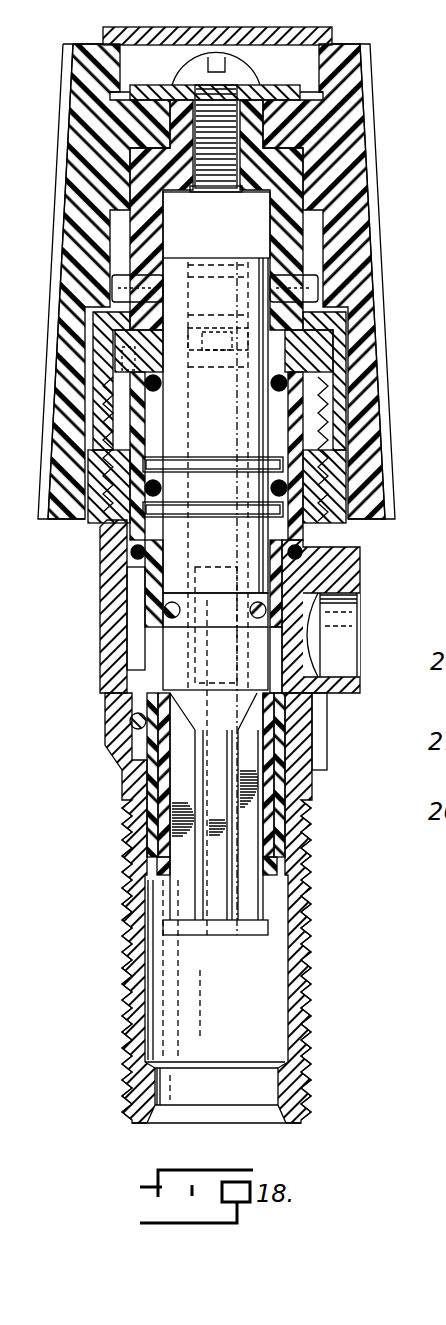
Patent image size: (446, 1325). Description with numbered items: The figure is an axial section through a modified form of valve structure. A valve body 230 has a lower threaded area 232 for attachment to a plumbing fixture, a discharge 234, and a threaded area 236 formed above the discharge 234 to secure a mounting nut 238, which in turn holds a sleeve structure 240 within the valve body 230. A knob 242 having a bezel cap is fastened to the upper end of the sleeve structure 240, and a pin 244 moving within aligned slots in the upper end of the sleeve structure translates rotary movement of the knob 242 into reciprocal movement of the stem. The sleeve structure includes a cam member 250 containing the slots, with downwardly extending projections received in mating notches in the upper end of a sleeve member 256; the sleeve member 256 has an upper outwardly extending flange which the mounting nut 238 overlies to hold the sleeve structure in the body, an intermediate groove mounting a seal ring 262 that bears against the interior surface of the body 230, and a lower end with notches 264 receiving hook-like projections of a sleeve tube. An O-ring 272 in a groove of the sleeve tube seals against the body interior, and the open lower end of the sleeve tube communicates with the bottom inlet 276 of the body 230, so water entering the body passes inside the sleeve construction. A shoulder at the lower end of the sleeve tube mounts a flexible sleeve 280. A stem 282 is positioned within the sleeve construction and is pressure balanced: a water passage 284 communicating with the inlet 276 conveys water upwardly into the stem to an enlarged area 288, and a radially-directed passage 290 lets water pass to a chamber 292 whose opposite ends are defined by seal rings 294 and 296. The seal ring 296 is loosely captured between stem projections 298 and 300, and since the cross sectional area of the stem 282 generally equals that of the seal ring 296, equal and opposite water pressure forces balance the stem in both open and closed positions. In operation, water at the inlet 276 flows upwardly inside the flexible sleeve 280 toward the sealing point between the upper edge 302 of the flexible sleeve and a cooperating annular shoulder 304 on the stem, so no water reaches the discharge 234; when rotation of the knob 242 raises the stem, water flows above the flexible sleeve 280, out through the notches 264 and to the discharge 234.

The valve body 230 is at (303, 915).
The lower threaded area 232 is at (310, 987).
The discharge 234 is at (360, 622).
The threaded area 236 is at (300, 472).
The mounting nut 238 is at (330, 343).
The sleeve structure 240 is at (307, 360).
The knob 242 is at (357, 143).
The pin 244 is at (308, 287).
The cam member 250 is at (290, 203).
The sleeve member 256 is at (295, 480).
The seal ring 262 is at (303, 556).
The notches 264 is at (303, 648).
The O-ring 272 is at (128, 727).
The bottom inlet 276 is at (218, 1117).
The flexible sleeve 280 is at (157, 817).
The stem 282 is at (253, 257).
The water passage 284 is at (200, 658).
The enlarged area 288 is at (213, 234).
The radially-directed passage 290 is at (240, 457).
The chamber 292 is at (283, 428).
The seal ring 294 is at (150, 384).
The seal ring 296 is at (330, 518).
The stem projection 298 is at (103, 521).
The stem projection 300 is at (107, 550).
The upper edge 302 is at (140, 667).
The annular shoulder 304 is at (276, 697).